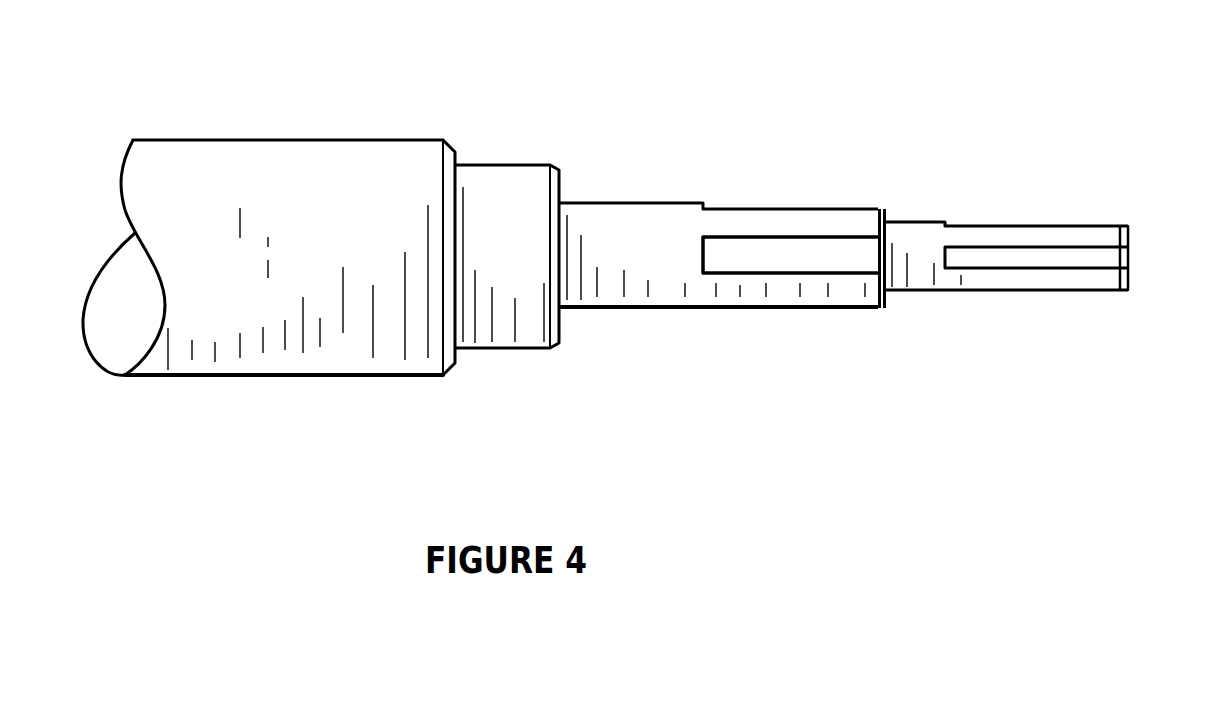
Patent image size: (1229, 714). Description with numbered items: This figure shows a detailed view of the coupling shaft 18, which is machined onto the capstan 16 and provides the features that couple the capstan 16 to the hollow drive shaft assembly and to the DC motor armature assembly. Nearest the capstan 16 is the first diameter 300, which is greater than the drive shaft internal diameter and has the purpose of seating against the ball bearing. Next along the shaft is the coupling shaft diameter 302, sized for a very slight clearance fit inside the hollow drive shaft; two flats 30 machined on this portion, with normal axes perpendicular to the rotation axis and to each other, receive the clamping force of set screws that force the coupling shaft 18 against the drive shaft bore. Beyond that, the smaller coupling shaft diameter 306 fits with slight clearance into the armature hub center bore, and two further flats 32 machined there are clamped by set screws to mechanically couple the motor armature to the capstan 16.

The capstan 16 is at (343, 347).
The first diameter 300 is at (482, 165).
The coupling shaft diameter 302 is at (643, 200).
The coupling shaft diameter 306 is at (920, 222).
The coupling shaft flats 30 is at (788, 262).
The coupling shaft flats 32 is at (988, 258).
The coupling shaft 18 is at (1128, 268).